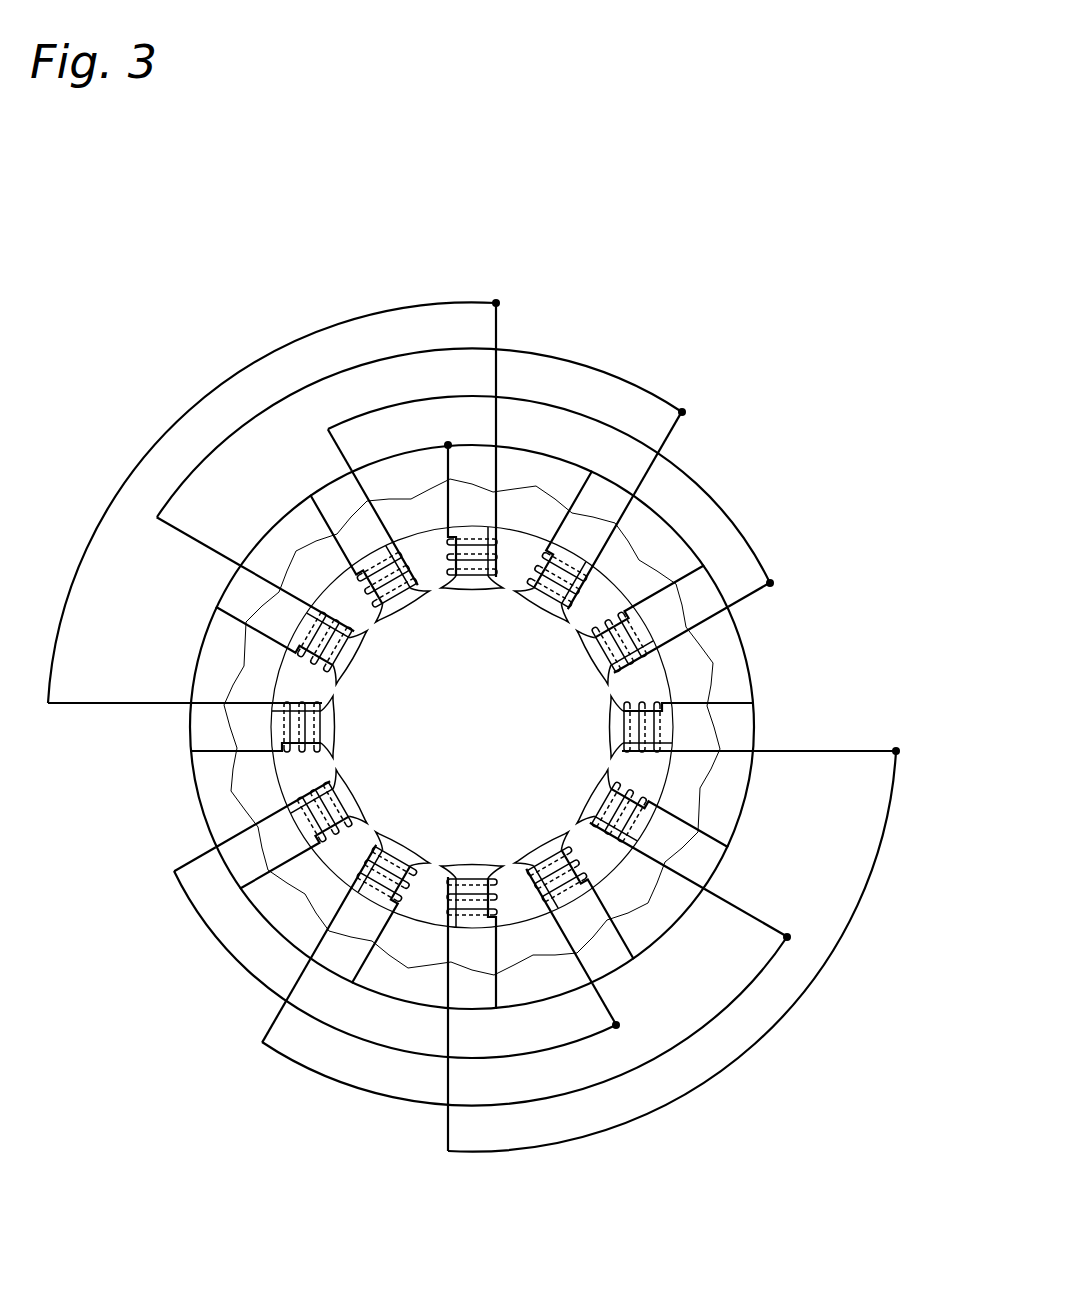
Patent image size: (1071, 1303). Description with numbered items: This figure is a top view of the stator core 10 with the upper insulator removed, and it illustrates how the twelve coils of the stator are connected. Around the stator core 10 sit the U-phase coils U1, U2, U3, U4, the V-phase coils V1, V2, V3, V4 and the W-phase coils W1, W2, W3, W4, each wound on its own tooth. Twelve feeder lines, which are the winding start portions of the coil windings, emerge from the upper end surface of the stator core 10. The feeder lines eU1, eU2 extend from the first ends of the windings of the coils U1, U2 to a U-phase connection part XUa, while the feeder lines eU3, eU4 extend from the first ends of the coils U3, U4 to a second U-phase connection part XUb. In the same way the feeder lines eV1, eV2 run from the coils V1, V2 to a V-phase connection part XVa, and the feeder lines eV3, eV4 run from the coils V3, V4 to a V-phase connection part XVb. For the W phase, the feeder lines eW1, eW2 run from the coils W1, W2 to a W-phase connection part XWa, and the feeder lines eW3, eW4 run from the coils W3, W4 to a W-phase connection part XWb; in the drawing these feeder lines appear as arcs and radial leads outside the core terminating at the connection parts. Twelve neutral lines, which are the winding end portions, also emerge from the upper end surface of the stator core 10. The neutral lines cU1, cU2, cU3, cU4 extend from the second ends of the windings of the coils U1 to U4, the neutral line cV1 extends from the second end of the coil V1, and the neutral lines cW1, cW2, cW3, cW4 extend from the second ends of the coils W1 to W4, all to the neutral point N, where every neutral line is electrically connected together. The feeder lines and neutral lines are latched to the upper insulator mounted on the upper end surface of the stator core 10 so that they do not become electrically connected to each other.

The stator core 10 is at (735, 731).
The neutral point N is at (442, 433).
The W-phase connection part XWa is at (497, 289).
The V-phase connection part XVa is at (694, 396).
The U-phase connection part XUa is at (790, 578).
The W-phase connection part XWb is at (921, 748).
The V-phase connection part XVb is at (804, 920).
The U-phase connection part XUb is at (640, 1016).
The coil U1 is at (600, 660).
The coil U2 is at (398, 598).
The coil U3 is at (545, 848).
The coil U4 is at (345, 790).
The coil V1 is at (547, 600).
The coil V2 is at (357, 660).
The coil V3 is at (600, 793).
The coil V4 is at (403, 862).
The coil W1 is at (474, 570).
The coil W2 is at (318, 727).
The coil W3 is at (625, 727).
The coil W4 is at (478, 878).
The feeder line eU1 is at (745, 596).
The feeder line eU2 is at (338, 448).
The feeder line eU3 is at (607, 998).
The feeder line eU4 is at (187, 858).
The feeder line eV1 is at (665, 437).
The feeder line eV2 is at (192, 536).
The feeder line eV3 is at (713, 834).
The feeder line eV4 is at (357, 977).
The feeder line eW1 is at (497, 325).
The feeder line eW2 is at (116, 700).
The feeder line eW3 is at (855, 750).
The feeder line eW4 is at (450, 1132).
The neutral line cU1 is at (693, 557).
The neutral line cU2 is at (317, 503).
The neutral line cU3 is at (627, 942).
The neutral line cU4 is at (256, 885).
The neutral line cV1 is at (593, 500).
The neutral line cW1 is at (445, 472).
The neutral line cW2 is at (200, 751).
The neutral line cW3 is at (737, 698).
The neutral line cW4 is at (500, 994).